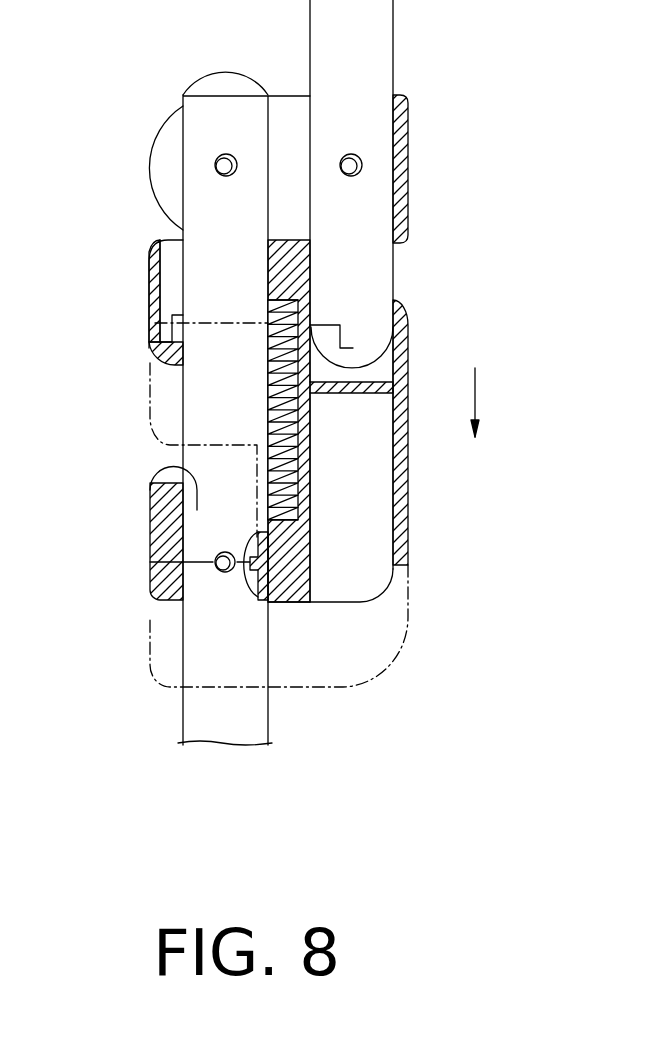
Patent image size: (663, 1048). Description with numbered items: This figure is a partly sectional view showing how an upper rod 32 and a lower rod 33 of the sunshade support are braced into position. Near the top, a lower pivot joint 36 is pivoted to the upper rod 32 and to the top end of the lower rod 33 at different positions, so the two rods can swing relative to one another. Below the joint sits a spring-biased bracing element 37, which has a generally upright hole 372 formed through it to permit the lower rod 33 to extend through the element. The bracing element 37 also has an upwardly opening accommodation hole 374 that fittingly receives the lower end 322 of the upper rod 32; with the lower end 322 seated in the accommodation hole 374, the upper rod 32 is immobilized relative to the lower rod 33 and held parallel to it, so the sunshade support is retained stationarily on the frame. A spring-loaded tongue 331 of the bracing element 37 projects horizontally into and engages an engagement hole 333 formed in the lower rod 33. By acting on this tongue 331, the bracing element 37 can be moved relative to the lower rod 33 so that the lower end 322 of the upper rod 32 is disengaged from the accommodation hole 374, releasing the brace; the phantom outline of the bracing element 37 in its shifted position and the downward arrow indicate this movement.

The upper rod 32 is at (393, 57).
The lower rod 33 is at (217, 732).
The lower pivot joint 36 is at (409, 209).
The spring-biased bracing element 37 is at (407, 535).
The lower end of the upper rod 322 is at (362, 330).
The spring-loaded tongue 331 is at (290, 588).
The engagement hole 333 is at (268, 602).
The upright hole 372 is at (160, 476).
The accommodation hole 374 is at (388, 357).